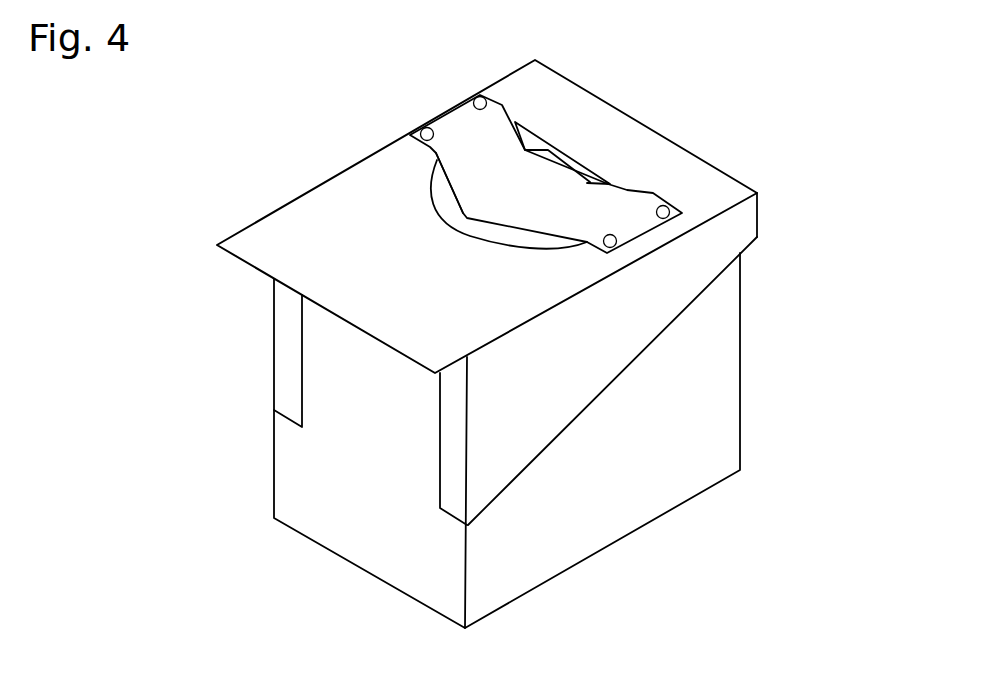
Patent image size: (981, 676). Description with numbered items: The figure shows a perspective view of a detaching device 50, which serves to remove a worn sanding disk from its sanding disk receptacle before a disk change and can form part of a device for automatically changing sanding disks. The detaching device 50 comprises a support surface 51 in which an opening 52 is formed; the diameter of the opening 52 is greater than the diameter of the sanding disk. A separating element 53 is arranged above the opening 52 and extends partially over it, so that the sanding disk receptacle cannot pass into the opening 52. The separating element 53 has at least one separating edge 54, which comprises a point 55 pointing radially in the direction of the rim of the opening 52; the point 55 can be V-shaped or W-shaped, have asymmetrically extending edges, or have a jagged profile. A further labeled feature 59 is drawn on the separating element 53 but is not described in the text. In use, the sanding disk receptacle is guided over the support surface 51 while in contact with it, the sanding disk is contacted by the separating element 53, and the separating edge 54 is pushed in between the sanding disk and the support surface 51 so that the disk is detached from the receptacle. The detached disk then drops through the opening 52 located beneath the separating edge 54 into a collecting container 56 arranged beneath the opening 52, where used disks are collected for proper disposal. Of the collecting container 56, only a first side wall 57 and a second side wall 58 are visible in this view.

The detaching device 50 is at (640, 100).
The support surface 51 is at (323, 280).
The opening 52 is at (447, 195).
The separating element 53 is at (497, 177).
The separating edge 54 is at (530, 225).
The point 55 is at (468, 213).
The collecting container 56 is at (653, 415).
The first side wall 57 is at (697, 407).
The second side wall 58 is at (362, 483).
The slot 59 is at (581, 170).